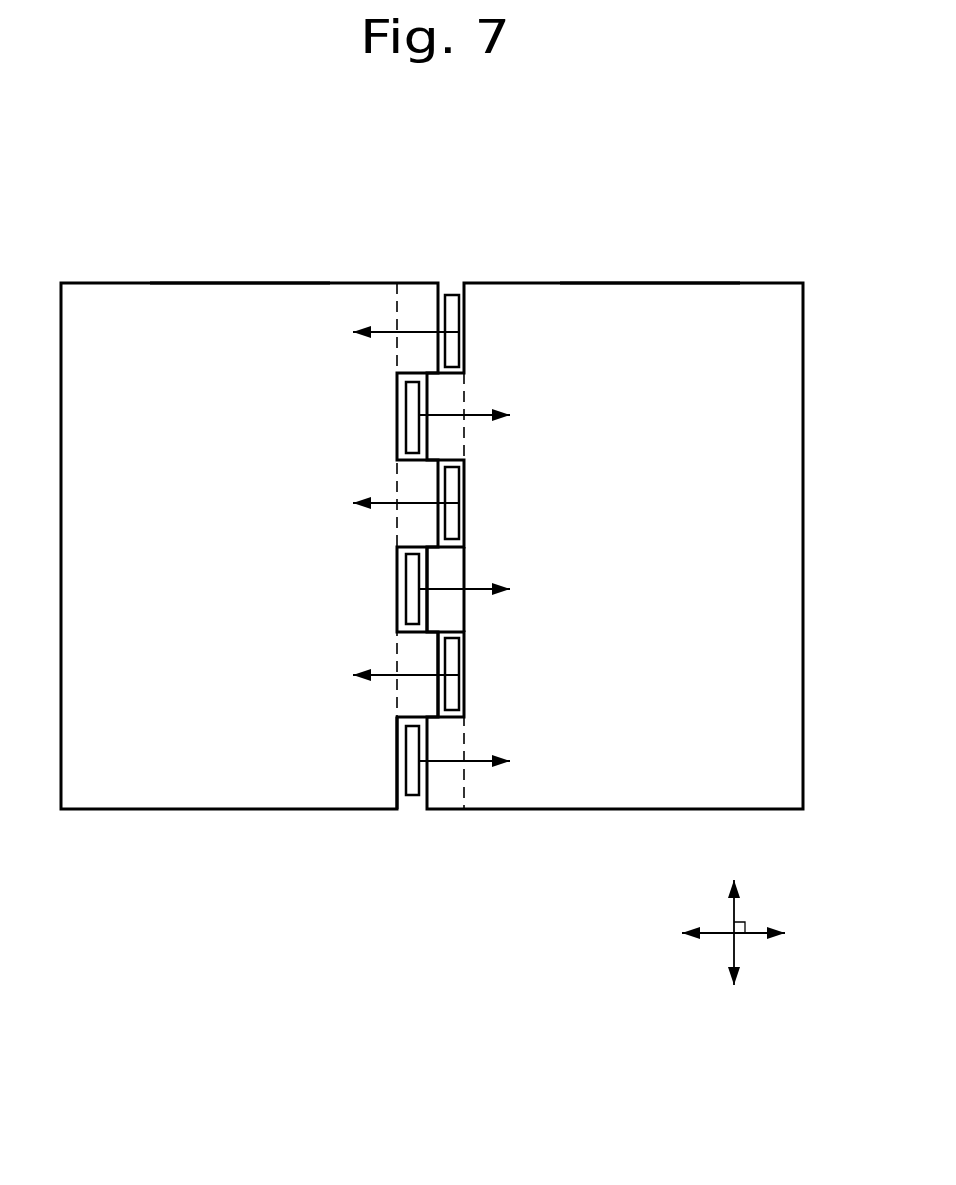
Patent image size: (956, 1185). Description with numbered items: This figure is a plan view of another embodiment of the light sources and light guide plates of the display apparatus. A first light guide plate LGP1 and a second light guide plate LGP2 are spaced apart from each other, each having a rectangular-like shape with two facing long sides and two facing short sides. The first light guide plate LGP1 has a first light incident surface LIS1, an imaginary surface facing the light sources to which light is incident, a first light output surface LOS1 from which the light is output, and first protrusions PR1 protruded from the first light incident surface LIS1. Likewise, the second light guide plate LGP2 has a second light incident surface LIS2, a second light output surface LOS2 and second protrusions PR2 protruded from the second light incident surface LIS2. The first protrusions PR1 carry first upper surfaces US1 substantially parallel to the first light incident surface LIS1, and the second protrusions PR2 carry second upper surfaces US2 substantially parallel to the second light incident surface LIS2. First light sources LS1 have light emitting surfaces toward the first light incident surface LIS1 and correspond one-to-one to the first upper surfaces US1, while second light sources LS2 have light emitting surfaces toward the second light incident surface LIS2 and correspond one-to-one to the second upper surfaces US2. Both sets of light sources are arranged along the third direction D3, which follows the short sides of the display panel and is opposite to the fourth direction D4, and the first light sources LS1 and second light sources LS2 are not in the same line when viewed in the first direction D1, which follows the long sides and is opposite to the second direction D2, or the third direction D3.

The first light guide plate LGP1 is at (112, 278).
The second light guide plate LGP2 is at (760, 278).
The first light output surface LOS1 is at (223, 297).
The second light output surface LOS2 is at (653, 297).
The first light incident surface LIS1 is at (398, 527).
The second light incident surface LIS2 is at (465, 437).
The first light source LS1 is at (458, 333).
The second light source LS2 is at (410, 415).
The first upper surface US1 is at (436, 647).
The second upper surface US2 is at (430, 563).
The first protrusion PR1 is at (408, 703).
The second protrusion PR2 is at (457, 616).
The first direction D1 is at (692, 934).
The second direction D2 is at (773, 934).
The third direction D3 is at (734, 891).
The fourth direction D4 is at (734, 976).